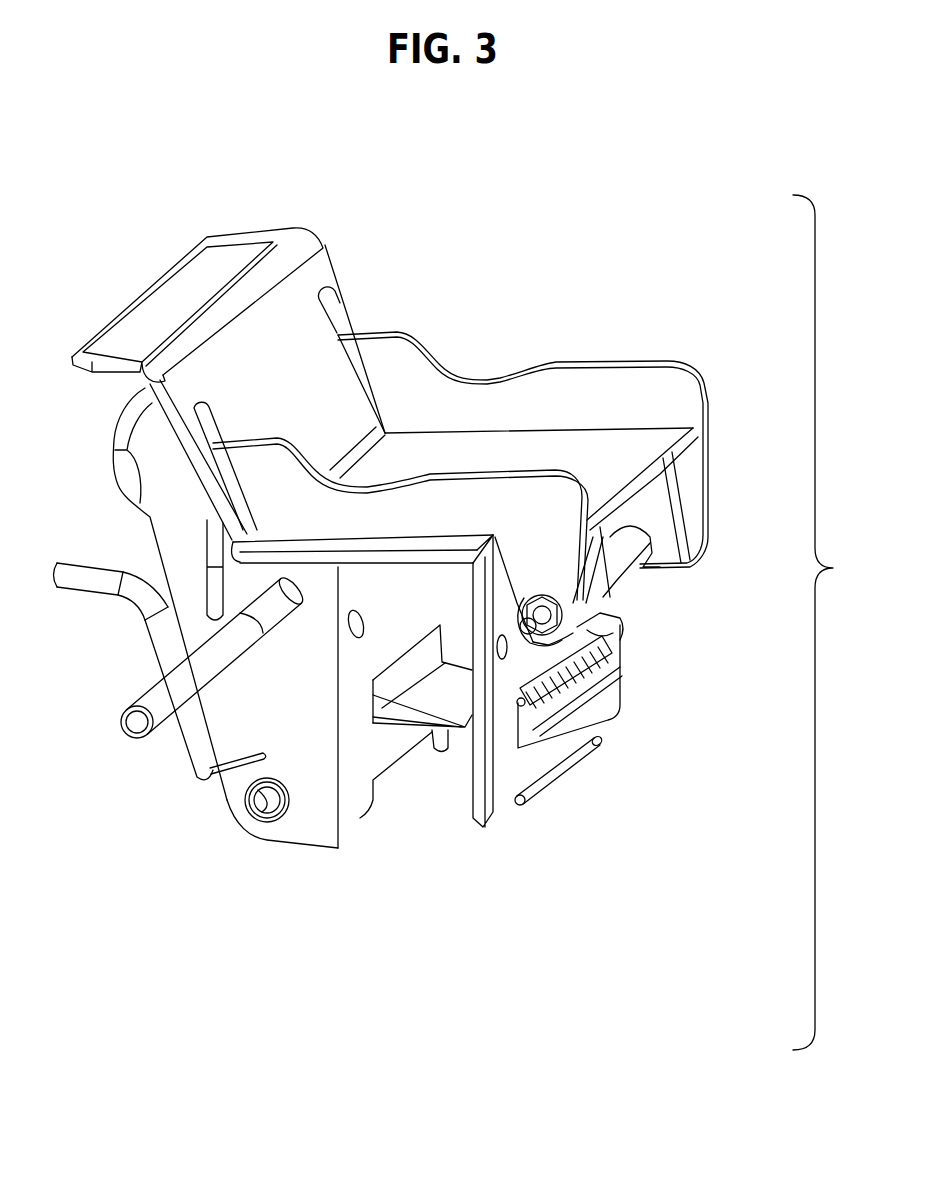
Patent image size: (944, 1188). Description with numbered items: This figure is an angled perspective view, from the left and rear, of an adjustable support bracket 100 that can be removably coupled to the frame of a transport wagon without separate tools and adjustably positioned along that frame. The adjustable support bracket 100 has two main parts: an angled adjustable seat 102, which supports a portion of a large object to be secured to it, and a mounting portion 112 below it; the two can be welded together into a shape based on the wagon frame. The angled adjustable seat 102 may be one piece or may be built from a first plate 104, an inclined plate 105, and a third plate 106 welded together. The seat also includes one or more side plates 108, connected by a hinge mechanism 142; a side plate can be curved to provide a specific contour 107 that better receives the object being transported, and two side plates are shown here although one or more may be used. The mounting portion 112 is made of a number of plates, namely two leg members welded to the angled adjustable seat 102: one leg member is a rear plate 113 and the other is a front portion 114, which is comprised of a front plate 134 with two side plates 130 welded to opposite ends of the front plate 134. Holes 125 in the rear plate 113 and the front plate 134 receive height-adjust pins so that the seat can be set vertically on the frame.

The adjustable support bracket 100 is at (834, 622).
The angled adjustable seat 102 is at (535, 207).
The first plate 104 is at (625, 457).
The inclined plate 105 is at (327, 276).
The third plate 106 is at (170, 300).
The specific contour 107 is at (443, 357).
The side plate 108 is at (592, 397).
The mounting portion 112 is at (415, 933).
The rear plate 113 is at (493, 810).
The front portion 114 is at (210, 822).
The holes 125 is at (362, 637).
The side plates 130 is at (292, 827).
The front plate 134 is at (353, 807).
The hinge mechanism 142 is at (688, 578).